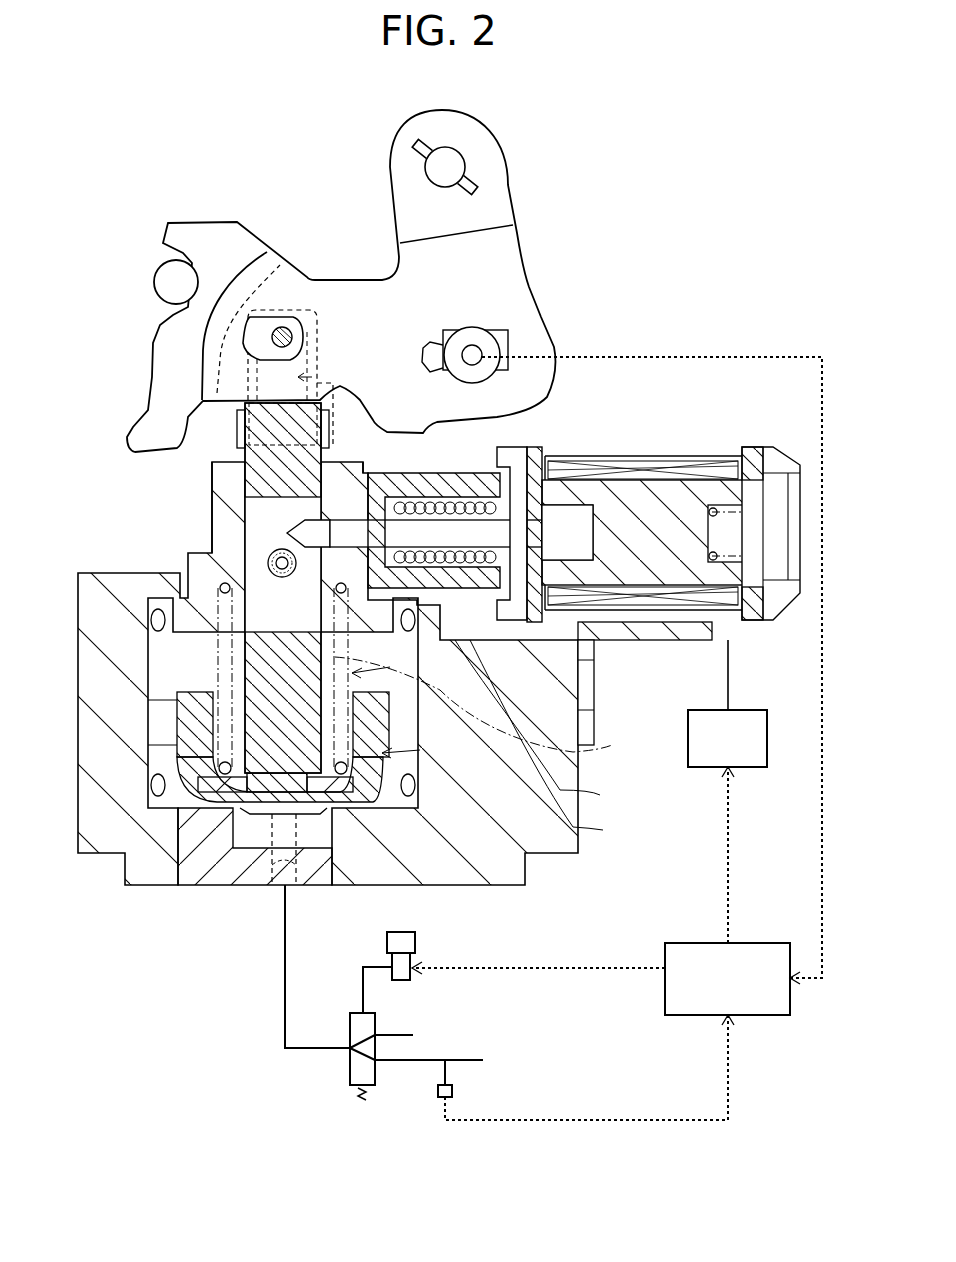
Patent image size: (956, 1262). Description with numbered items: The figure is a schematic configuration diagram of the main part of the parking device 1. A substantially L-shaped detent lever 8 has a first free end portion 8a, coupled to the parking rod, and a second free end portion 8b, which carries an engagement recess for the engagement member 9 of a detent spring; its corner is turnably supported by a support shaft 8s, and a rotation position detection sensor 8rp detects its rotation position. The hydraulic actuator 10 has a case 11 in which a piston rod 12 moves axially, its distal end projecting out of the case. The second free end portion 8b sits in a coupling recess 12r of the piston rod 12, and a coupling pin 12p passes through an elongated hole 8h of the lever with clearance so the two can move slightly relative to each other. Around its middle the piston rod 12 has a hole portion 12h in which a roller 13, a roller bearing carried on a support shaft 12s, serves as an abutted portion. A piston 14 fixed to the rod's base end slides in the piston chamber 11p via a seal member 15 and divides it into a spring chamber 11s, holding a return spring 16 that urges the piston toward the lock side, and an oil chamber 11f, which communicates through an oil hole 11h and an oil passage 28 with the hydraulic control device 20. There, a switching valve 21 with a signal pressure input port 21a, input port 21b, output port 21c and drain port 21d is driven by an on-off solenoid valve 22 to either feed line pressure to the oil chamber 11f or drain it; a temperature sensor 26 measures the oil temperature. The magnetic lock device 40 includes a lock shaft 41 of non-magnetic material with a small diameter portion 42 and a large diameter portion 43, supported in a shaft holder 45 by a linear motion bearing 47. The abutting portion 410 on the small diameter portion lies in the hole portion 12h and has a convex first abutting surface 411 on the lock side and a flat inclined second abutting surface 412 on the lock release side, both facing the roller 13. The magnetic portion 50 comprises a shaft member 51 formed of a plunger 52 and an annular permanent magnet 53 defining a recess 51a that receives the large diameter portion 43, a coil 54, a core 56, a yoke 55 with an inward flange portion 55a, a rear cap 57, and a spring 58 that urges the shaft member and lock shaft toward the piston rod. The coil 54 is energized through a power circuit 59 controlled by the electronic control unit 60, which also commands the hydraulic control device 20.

The parking device 1 is at (733, 173).
The detent lever 8 is at (342, 262).
The first free end portion 8a is at (470, 137).
The second free end portion 8b is at (158, 345).
The elongated hole 8h is at (245, 350).
The support shaft 8s is at (482, 340).
The rotation position detection sensor 8rp is at (477, 355).
The engagement member 9 is at (162, 283).
The hydraulic actuator 10 is at (92, 480).
The case 11 is at (92, 572).
The oil hole 11h is at (270, 890).
The spring chamber 11s is at (550, 724).
The oil chamber 11f is at (557, 741).
The piston chamber 11p is at (648, 783).
The piston rod 12 is at (270, 665).
The hole portion 12h is at (275, 507).
The coupling pin 12p is at (300, 320).
The coupling recess 12r is at (335, 436).
The support shaft 12s is at (267, 560).
The roller 13 is at (268, 551).
The piston 14 is at (338, 810).
The seal member 15 is at (175, 713).
The return spring 16 is at (612, 745).
The hydraulic control device 20 is at (386, 998).
The switching valve 21 is at (399, 1032).
The signal pressure input port 21a is at (363, 1000).
The input port 21b is at (375, 1062).
The output port 21c is at (350, 1040).
The drain port 21d is at (375, 1032).
The on-off solenoid valve 22 is at (417, 942).
The temperature sensor 26 is at (455, 1091).
The oil passage 28 is at (285, 1004).
The magnetic lock device 40 is at (643, 408).
The lock shaft 41 is at (622, 414).
The small diameter portion 42 is at (520, 537).
The large diameter portion 43 is at (565, 535).
The shaft holder 45 is at (440, 482).
The linear motion bearing 47 is at (483, 500).
The magnetic portion 50 is at (679, 560).
The shaft member 51 is at (627, 517).
The recess 51a is at (580, 573).
The plunger 52 is at (640, 563).
The permanent magnet 53 is at (573, 595).
The coil 54 is at (702, 468).
The yoke 55 is at (718, 645).
The flange portion 55a is at (593, 647).
The core 56 is at (692, 462).
The rear cap 57 is at (768, 622).
The spring 58 is at (748, 632).
The power circuit 59 is at (760, 768).
The electronic control unit 60 is at (740, 945).
The abutting portion 410 is at (307, 515).
The first abutting surface 411 is at (287, 531).
The second abutting surface 412 is at (290, 516).